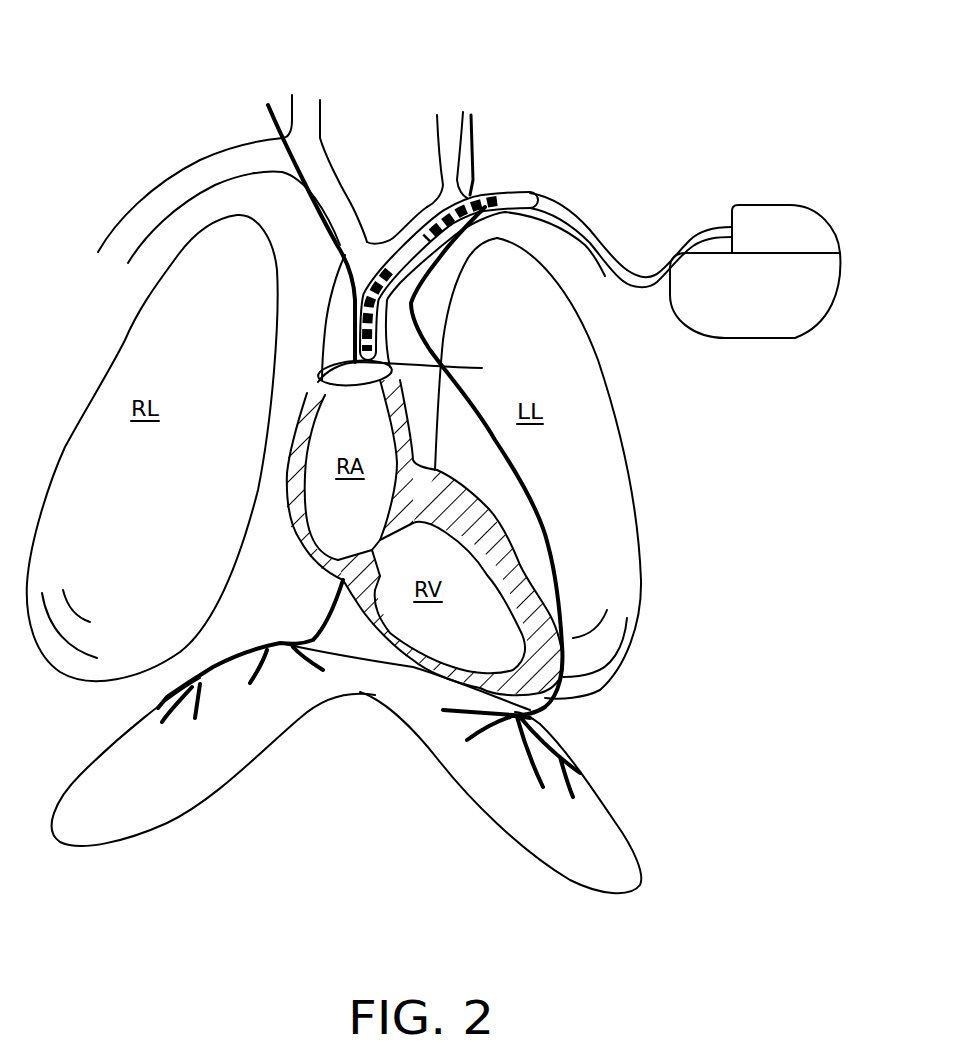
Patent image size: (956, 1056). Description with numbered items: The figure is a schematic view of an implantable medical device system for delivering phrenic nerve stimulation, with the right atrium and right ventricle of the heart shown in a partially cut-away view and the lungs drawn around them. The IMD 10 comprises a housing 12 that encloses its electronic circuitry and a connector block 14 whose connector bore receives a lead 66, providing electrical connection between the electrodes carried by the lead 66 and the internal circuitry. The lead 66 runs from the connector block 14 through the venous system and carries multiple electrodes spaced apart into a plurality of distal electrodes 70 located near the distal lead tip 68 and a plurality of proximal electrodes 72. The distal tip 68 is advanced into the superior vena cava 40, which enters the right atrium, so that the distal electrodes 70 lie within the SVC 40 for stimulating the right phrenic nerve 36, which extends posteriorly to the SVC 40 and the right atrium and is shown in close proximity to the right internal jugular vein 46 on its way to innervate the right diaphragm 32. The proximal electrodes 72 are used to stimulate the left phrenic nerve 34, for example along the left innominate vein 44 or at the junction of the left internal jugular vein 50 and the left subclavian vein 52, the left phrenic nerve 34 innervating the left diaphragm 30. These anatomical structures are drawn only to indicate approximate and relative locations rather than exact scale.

The IMD 10 is at (746, 244).
The housing 12 is at (753, 340).
The connector block 14 is at (838, 237).
The left diaphragm 30 is at (607, 862).
The right diaphragm 32 is at (97, 812).
The left phrenic nerve 34 is at (475, 170).
The right phrenic nerve 36 is at (267, 115).
The superior vena cava 40 is at (330, 327).
The left innominate vein 44 is at (390, 240).
The right internal jugular vein 46 is at (320, 113).
The left internal jugular vein 50 is at (440, 122).
The left subclavian vein 52 is at (605, 229).
The lead 66 is at (661, 250).
The distal lead tip 68 is at (482, 368).
The distal electrodes 70 is at (413, 250).
The proximal electrodes 72 is at (424, 229).